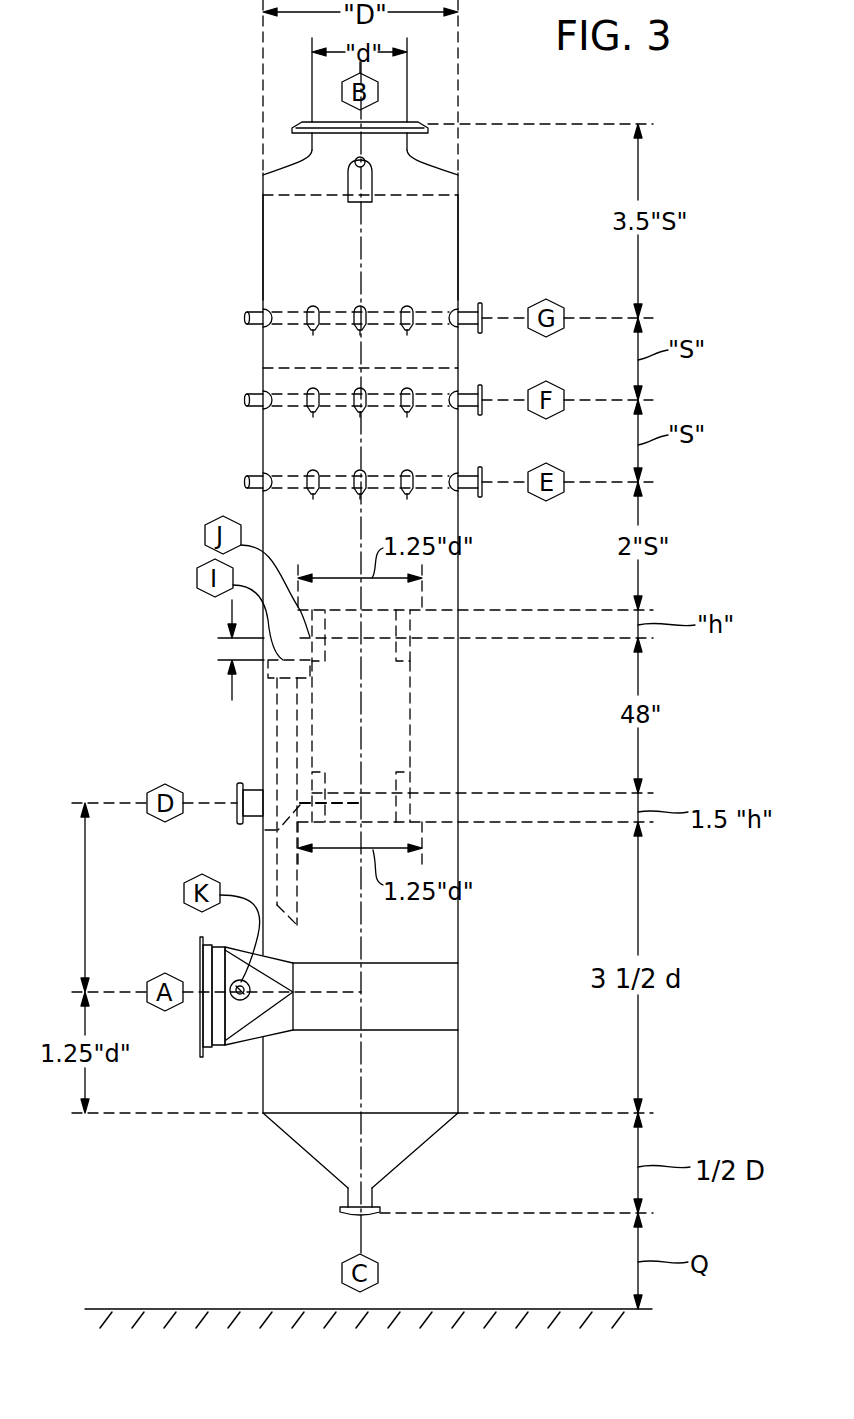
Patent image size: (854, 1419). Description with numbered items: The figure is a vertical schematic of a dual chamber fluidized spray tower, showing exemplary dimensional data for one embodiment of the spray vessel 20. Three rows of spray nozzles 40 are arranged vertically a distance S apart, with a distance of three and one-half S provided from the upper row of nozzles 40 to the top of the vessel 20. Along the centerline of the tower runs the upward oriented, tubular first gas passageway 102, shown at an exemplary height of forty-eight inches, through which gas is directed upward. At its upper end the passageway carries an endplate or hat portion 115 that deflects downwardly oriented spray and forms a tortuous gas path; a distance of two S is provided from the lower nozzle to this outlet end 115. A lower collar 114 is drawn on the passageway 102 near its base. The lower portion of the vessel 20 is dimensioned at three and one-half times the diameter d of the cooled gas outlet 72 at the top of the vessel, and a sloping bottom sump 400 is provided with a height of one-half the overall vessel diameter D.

The cooled gas outlet 72 is at (428, 125).
The spray tower 20 is at (498, 213).
The spray nozzles 40 is at (247, 482).
The endplate or hat portion 115 is at (378, 608).
The first gas passageway 102 is at (410, 690).
The lower collar of distributor 114 is at (373, 822).
The sloping bottom sump 400 is at (405, 1160).